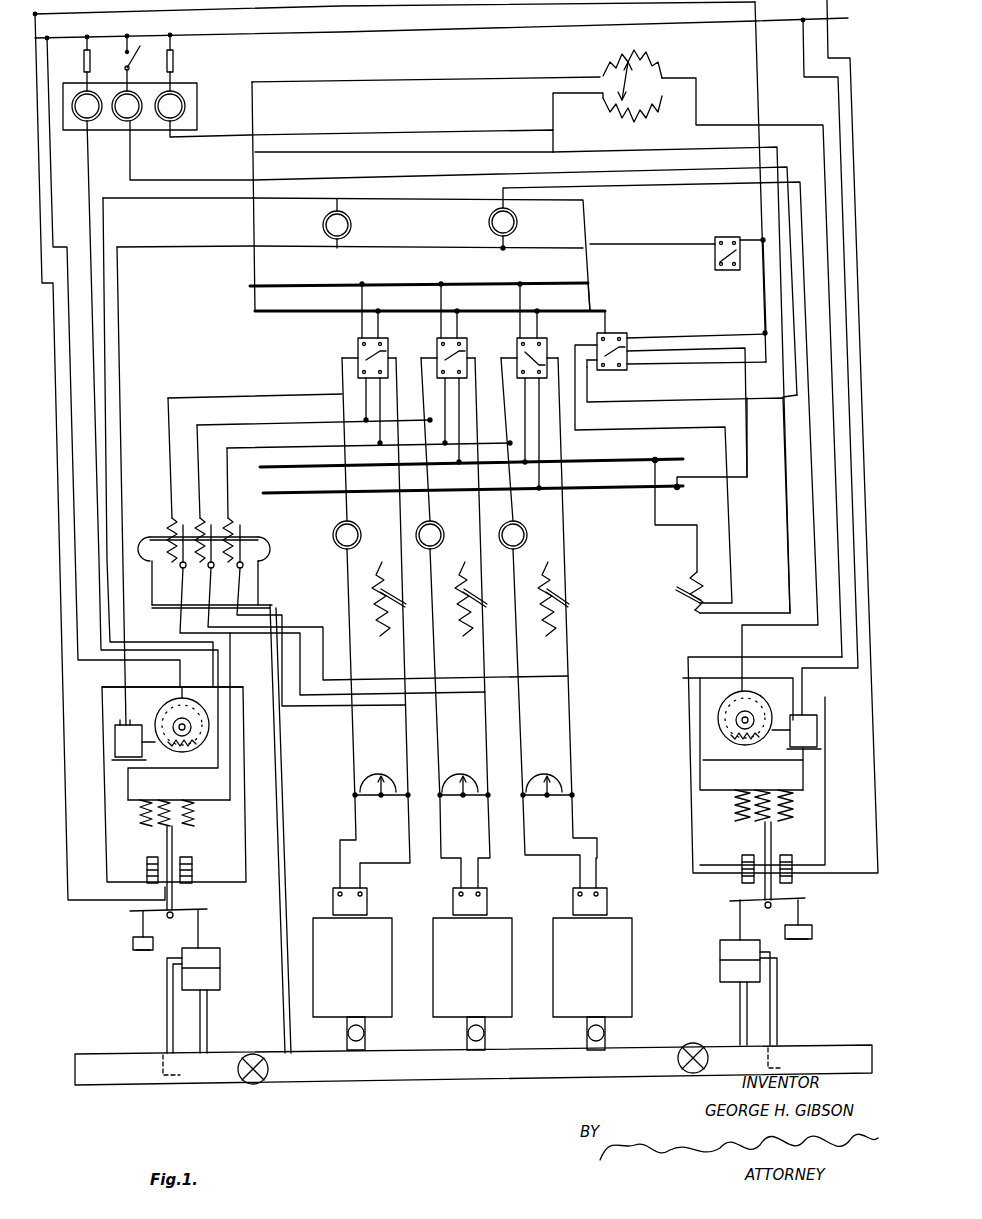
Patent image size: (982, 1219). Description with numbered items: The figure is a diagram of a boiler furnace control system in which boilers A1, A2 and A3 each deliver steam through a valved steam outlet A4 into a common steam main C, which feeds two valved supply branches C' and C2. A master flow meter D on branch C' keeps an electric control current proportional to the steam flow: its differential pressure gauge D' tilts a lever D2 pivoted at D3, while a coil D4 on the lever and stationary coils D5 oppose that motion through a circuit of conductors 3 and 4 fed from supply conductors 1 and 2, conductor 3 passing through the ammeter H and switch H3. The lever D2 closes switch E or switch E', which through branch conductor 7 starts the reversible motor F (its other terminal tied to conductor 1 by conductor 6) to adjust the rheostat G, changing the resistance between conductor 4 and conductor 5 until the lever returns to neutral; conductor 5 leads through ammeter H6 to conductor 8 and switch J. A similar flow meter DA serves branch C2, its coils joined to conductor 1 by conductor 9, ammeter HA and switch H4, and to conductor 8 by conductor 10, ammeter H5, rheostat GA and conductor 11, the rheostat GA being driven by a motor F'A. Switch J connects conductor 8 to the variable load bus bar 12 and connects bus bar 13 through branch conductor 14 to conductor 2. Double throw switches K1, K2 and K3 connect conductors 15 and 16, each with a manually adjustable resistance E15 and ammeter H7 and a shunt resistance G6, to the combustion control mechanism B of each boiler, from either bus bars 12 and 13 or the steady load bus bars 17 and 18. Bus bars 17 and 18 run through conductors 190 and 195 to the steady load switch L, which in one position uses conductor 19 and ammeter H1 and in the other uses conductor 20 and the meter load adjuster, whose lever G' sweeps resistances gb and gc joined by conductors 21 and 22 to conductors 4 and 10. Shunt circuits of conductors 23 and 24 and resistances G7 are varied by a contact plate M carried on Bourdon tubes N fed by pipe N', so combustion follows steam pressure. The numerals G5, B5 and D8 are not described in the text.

The electric supply conductor 1 is at (245, 30).
The electric supply conductor 2 is at (288, 14).
The conductor 3 is at (88, 160).
The conductor 4 is at (254, 126).
The conductor 5 is at (292, 208).
The conductor 6 is at (76, 552).
The branch conductor 7 is at (66, 705).
The conductor 8 is at (226, 135).
The conductor 9 is at (876, 582).
The conductor 10 is at (736, 766).
The conductor 11 is at (502, 190).
The bus bar 12 is at (318, 276).
The bus bar 13 is at (314, 316).
The branch conductor 14 is at (758, 101).
The conductor 15 is at (354, 742).
The conductor 16 is at (406, 748).
The steady load bus bar 17 is at (610, 460).
The steady load bus bar 18 is at (590, 498).
The conductor 19 is at (130, 160).
The conductor 20 is at (696, 100).
The conductor 21 is at (436, 75).
The conductor 22 is at (553, 104).
The conductor 23 is at (227, 457).
The conductor 24 is at (282, 628).
The conductor 190 is at (735, 500).
The conductor 195 is at (746, 444).
The ammeter H is at (130, 106).
The ammeter HA is at (170, 106).
The ammeter H1 is at (133, 112).
The switch H3 is at (84, 60).
The switch H4 is at (175, 62).
The ammeter H5 is at (126, 56).
The ammeter H6 is at (352, 224).
The ammeter H7 is at (354, 524).
The rheostat G is at (401, 461).
The switch lever G' is at (607, 64).
The resistance gb is at (642, 58).
The resistance gc is at (650, 110).
The rheostat G5 is at (676, 602).
The manually adjustable resistance G6 is at (392, 806).
The resistance G7 is at (176, 509).
The rheostat GA is at (760, 704).
The switch J is at (712, 238).
The double throw switch K1 is at (546, 340).
The double throw switch K2 is at (468, 340).
The double throw switch K3 is at (390, 340).
The steady load switch L is at (628, 372).
The contact plate M is at (242, 522).
The Bourdon tubes N is at (214, 551).
The pipe N' is at (292, 829).
The manually adjustable resistance E15 is at (396, 578).
The reversible motor F is at (113, 740).
The motor F'A is at (821, 732).
The coil D4 is at (172, 800).
The stationary coils D5 is at (148, 816).
The solenoid coil B5 is at (194, 820).
The switch E is at (467, 865).
The switch E' is at (464, 865).
The master flow meter D is at (130, 929).
The differential pressure gauge D' is at (468, 919).
The lever D2 is at (176, 904).
The pivot D3 is at (202, 918).
The valve D8 is at (242, 970).
The master flow meter DA is at (814, 919).
The combustion control mechanism B is at (370, 904).
The boiler A1 is at (592, 967).
The boiler A2 is at (472, 967).
The boiler A3 is at (352, 967).
The valved steam outlet A4 is at (366, 1034).
The steam main C is at (473, 1078).
The supply branch C' is at (215, 1085).
The supply branch C2 is at (722, 1072).